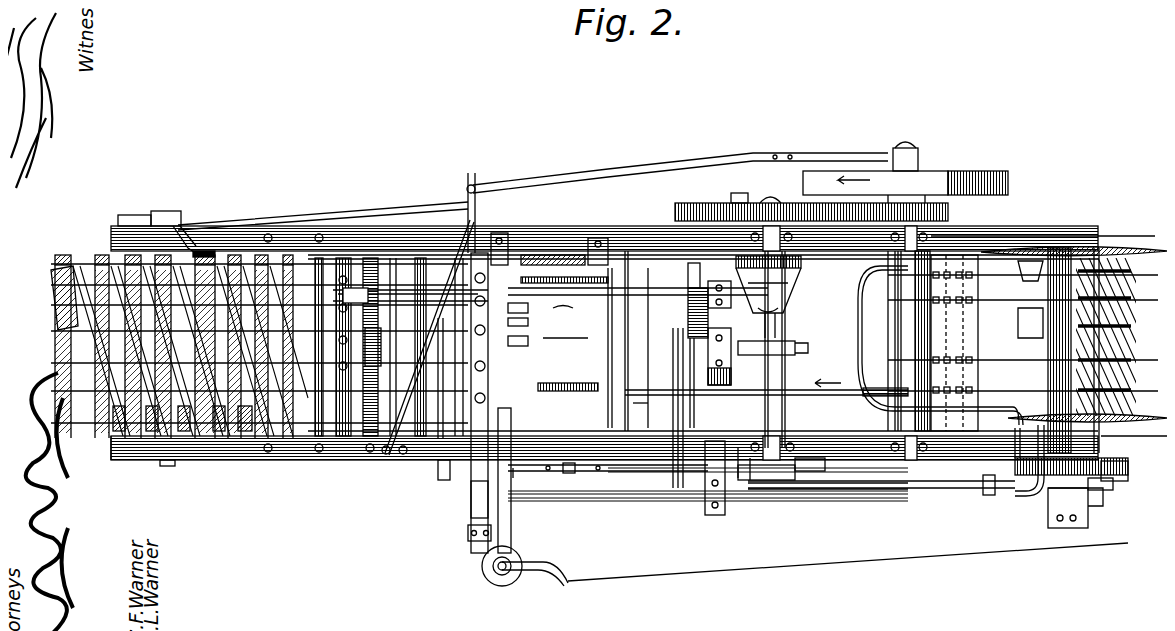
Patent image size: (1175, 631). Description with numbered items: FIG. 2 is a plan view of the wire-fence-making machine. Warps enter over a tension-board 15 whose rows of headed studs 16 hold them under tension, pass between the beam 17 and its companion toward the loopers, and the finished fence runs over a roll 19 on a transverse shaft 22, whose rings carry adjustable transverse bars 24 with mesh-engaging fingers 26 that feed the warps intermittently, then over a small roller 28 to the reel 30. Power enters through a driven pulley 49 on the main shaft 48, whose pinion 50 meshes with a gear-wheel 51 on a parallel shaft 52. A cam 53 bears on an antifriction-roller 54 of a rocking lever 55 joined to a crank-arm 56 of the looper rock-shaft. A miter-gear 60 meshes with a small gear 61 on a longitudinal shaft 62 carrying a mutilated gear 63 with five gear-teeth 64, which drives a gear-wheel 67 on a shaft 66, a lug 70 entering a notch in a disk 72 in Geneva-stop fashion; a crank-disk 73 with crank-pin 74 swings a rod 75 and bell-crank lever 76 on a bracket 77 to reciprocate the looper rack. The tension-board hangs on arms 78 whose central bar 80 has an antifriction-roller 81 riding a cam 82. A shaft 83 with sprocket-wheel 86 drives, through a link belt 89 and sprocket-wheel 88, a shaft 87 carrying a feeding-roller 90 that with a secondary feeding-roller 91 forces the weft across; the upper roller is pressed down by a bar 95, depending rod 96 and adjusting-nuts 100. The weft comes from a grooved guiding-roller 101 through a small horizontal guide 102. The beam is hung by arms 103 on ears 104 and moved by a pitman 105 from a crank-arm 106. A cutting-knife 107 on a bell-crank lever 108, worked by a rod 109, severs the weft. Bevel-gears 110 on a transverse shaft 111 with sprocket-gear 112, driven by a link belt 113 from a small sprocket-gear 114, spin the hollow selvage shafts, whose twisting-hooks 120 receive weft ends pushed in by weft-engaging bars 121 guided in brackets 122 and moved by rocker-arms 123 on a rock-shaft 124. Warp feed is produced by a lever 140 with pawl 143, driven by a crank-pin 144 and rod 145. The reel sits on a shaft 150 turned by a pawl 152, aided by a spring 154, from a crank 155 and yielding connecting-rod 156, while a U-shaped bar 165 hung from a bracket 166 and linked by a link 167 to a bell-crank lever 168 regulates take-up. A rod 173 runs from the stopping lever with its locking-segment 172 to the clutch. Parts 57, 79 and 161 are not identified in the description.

The tension-board 15 is at (972, 278).
The headed studs 16 is at (972, 258).
The beam 17 is at (475, 250).
The barrel or roll 19 is at (115, 432).
The transverse shaft 22 is at (160, 205).
The transverse bars 24 is at (70, 250).
The mesh-engaging fingers 26 is at (45, 266).
The small roller 28 is at (280, 452).
The reel 30 is at (1138, 243).
The main shaft 48 is at (900, 140).
The driven pulley 49 is at (990, 163).
The pinion 50 is at (940, 203).
The gear-wheel 51 is at (785, 195).
The shaft 52 is at (770, 285).
The cam 53 is at (765, 480).
The antifriction-roller 54 is at (818, 481).
The rocking lever 55 is at (820, 456).
The crank-arm 56 is at (540, 470).
The rod 57 is at (728, 475).
The miter-gear 60 is at (793, 256).
The small gear 61 is at (775, 298).
The longitudinally-disposed shaft 62 is at (620, 280).
The mutilated gear 63 is at (335, 250).
The gear-teeth 64 is at (678, 298).
The shaft 66 is at (372, 330).
The gear-wheel 67 is at (360, 355).
The lug 70 is at (745, 340).
The disk 72 is at (684, 380).
The crank-disk 73 is at (375, 450).
The crank-pin 74 is at (432, 320).
The rod 75 is at (398, 452).
The bell-crank lever 76 is at (430, 470).
The bracket 77 is at (440, 440).
The vertically-disposed arms 78 is at (975, 228).
The pipe 79 is at (862, 272).
The central bar 80 is at (858, 370).
The antifriction-roller 81 is at (795, 345).
The cam 82 is at (725, 350).
The shaft 83 is at (648, 350).
The sprocket-wheel 86 is at (665, 365).
The longitudinally-disposed shaft 87 is at (620, 495).
The sprocket-wheel 88 is at (665, 500).
The link belt 89 is at (665, 396).
The feeding-roller 90 is at (463, 520).
The secondary feeding-roller 91 is at (462, 505).
The bar 95 is at (505, 520).
The depending rod 96 is at (484, 558).
The adjusting-nuts 100 is at (498, 565).
The grooved guiding-roller 101 is at (480, 575).
The small horizontal guide 102 is at (468, 525).
The rearwardly-extending arms 103 is at (533, 303).
The ears 104 is at (536, 317).
The pitman 105 is at (515, 335).
The crank-arm 106 is at (575, 331).
The cutting-knife 107 is at (465, 480).
The bell-crank lever 108 is at (540, 248).
The rod 109 is at (590, 230).
The bevel-gears 110 is at (585, 358).
The transversely-disposed shaft 111 is at (579, 303).
The sprocket-gear 112 is at (540, 376).
The link belt 113 is at (835, 388).
The small sprocket-gear 114 is at (875, 380).
The twisting-hook 120 is at (500, 240).
The weft-engaging bars 121 is at (385, 250).
The small brackets 122 is at (448, 215).
The rocker-arm 123 is at (355, 255).
The rock-shaft 124 is at (330, 450).
The lever 140 is at (135, 208).
The pawl 143 is at (205, 245).
The crank-pin 144 is at (735, 185).
The rod 145 is at (380, 203).
The shaft 150 is at (1070, 512).
The pawl 152 is at (1120, 462).
The spring 154 is at (1085, 495).
The crank 155 is at (745, 475).
The yielding connecting-rod 156 is at (920, 482).
The gear 161 is at (1122, 455).
The U-shaped bar 165 is at (1010, 396).
The bracket 166 is at (1005, 430).
The link 167 is at (1025, 485).
The bell-crank lever 168 is at (1105, 478).
The locking-segment 172 is at (300, 470).
The rod 173 is at (465, 175).